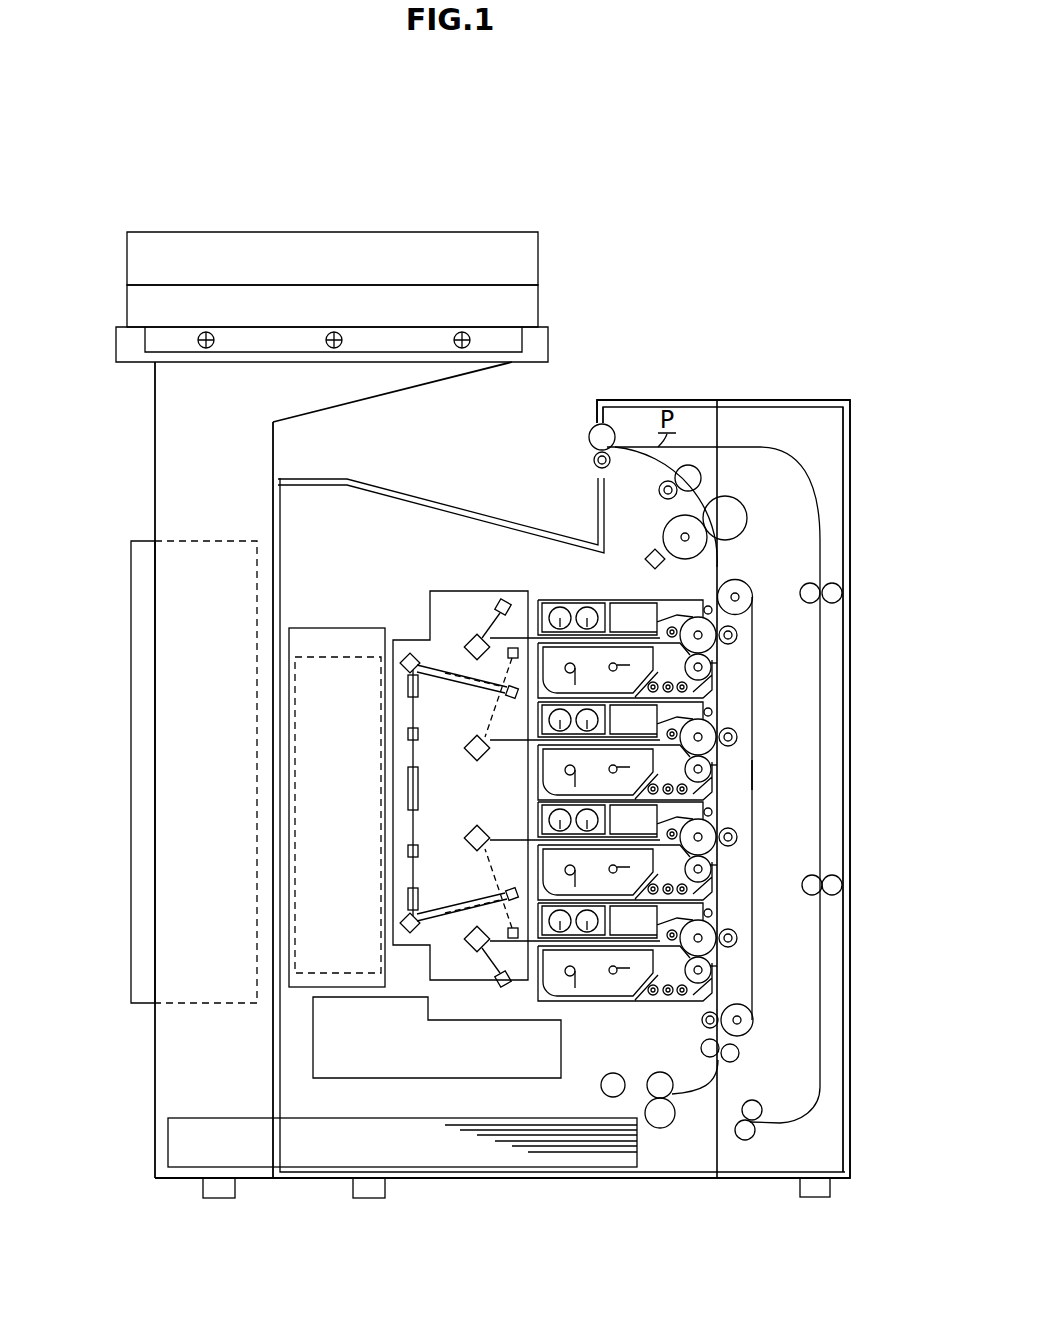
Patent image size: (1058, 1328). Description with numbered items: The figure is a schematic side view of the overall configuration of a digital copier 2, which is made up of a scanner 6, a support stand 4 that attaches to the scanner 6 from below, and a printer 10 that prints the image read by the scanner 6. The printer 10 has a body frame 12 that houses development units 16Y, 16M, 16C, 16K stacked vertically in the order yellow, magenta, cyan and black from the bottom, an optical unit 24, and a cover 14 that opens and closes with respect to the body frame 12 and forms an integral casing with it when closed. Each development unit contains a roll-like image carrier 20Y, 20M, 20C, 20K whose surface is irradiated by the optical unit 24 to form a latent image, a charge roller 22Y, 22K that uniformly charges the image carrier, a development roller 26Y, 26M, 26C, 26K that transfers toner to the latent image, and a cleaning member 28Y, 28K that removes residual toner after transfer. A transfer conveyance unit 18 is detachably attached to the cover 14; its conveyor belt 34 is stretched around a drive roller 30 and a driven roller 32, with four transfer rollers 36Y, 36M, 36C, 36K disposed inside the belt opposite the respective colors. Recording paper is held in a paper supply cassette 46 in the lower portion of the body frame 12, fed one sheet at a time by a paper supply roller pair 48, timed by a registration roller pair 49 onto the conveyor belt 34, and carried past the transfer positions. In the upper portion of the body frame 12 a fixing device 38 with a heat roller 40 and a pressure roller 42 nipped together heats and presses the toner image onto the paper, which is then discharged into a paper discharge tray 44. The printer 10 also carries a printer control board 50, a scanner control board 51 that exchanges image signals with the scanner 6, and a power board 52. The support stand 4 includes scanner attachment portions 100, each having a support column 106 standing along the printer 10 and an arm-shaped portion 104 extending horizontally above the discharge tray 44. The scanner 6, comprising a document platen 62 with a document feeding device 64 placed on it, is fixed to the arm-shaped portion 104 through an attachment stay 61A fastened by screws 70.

The digital copier 2 is at (585, 367).
The support stand 4 is at (144, 466).
The scanner 6 is at (370, 227).
The printer 10 is at (651, 379).
The body frame 12 is at (717, 400).
The cover 14 is at (850, 507).
The development unit (black) 16K is at (652, 620).
The development unit (cyan) 16C is at (624, 753).
The development unit (magenta) 16M is at (626, 862).
The development unit (yellow) 16Y is at (628, 975).
The transfer conveyance unit 18 is at (810, 808).
The image carrier (black) 20K is at (737, 636).
The image carrier (cyan) 20C is at (737, 738).
The image carrier (magenta) 20M is at (737, 838).
The image carrier (yellow) 20Y is at (737, 939).
The charge roller (black) 22K is at (660, 615).
The charge roller (yellow) 22Y is at (645, 945).
The optical unit 24 is at (460, 592).
The development roller (black) 26K is at (717, 668).
The development roller (cyan) 26C is at (717, 770).
The development roller (magenta) 26M is at (717, 880).
The development roller (yellow) 26Y is at (717, 985).
The cleaning member (black) 28K is at (717, 563).
The cleaning member (yellow) 28Y is at (690, 957).
The drive roller 30 is at (723, 574).
The driven roller 32 is at (753, 1022).
The conveyor belt 34 is at (755, 774).
The transfer roller (black) 36K is at (737, 645).
The transfer roller (cyan) 36C is at (737, 747).
The transfer roller (magenta) 36M is at (737, 847).
The transfer roller (yellow) 36Y is at (717, 968).
The fixing device 38 is at (726, 482).
The heat roller 40 is at (660, 494).
The pressure roller 42 is at (747, 527).
The paper discharge tray 44 is at (456, 505).
The paper supply cassette 46 is at (470, 1153).
The paper supply roller pair 48 is at (674, 1122).
The registration roller pair 49 is at (740, 1053).
The printer control board 50 is at (293, 794).
The scanner control board 51 is at (131, 698).
The power board 52 is at (297, 961).
The attachment stay 61A is at (250, 352).
The document platen 62 is at (538, 303).
The document feeding device 64 is at (538, 258).
The screws 70 is at (206, 348).
The scanner attachment portion 100 is at (200, 765).
The arm-shaped portion 104 is at (353, 401).
The support column 106 is at (200, 835).